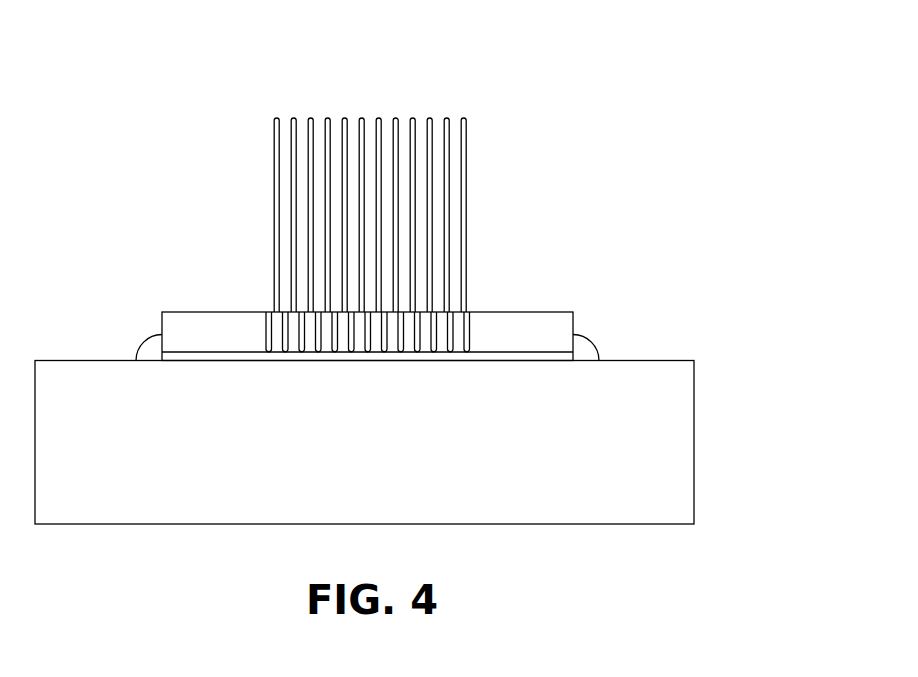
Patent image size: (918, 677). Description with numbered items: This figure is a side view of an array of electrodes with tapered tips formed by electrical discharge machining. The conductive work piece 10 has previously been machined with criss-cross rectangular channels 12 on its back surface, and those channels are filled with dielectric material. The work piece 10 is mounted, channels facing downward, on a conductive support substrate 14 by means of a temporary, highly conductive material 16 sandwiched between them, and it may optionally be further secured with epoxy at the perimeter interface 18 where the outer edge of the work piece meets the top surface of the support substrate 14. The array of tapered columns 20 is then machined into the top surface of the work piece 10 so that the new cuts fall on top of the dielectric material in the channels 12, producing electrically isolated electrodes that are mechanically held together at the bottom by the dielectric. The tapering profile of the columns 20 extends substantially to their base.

The conductive work piece 10 is at (510, 312).
The rectangular channels 12 is at (320, 312).
The conductive support substrate 14 is at (694, 441).
The conductive material 16 is at (178, 352).
The perimeter interface 18 is at (593, 347).
The tapered columns 20 is at (510, 126).